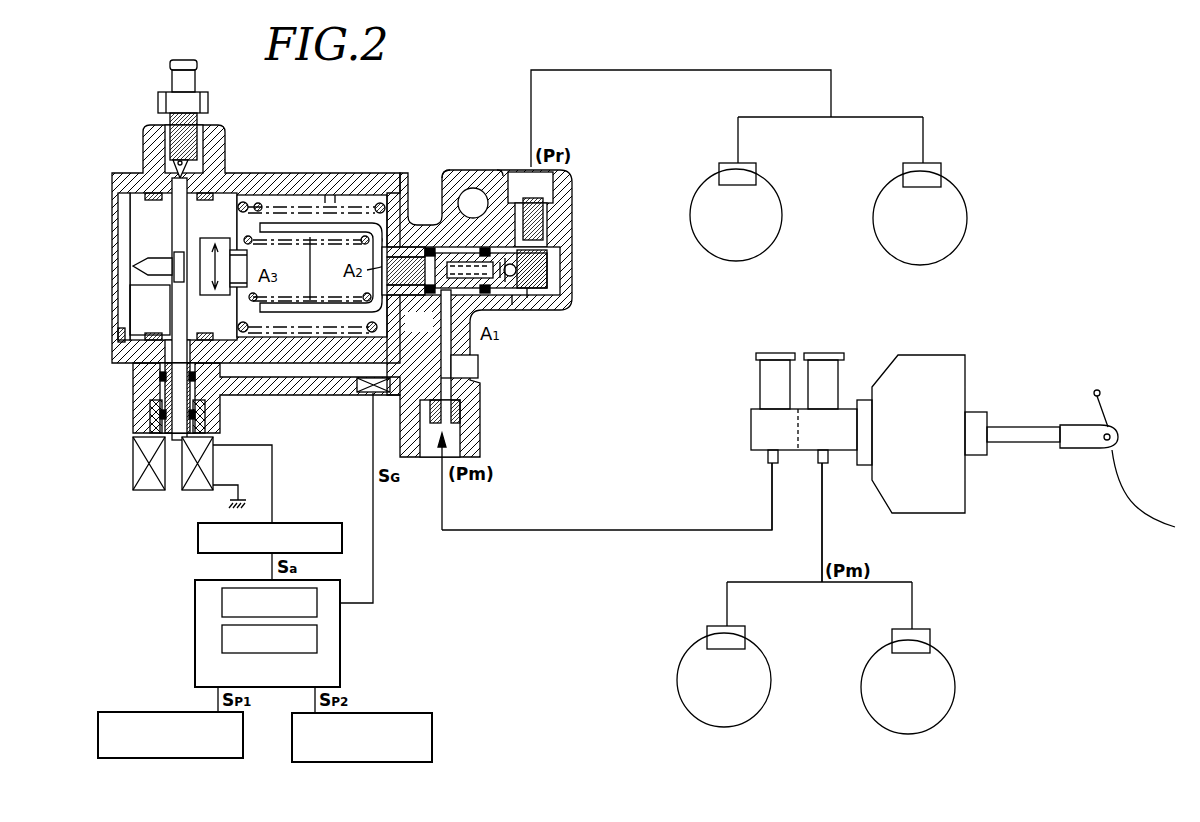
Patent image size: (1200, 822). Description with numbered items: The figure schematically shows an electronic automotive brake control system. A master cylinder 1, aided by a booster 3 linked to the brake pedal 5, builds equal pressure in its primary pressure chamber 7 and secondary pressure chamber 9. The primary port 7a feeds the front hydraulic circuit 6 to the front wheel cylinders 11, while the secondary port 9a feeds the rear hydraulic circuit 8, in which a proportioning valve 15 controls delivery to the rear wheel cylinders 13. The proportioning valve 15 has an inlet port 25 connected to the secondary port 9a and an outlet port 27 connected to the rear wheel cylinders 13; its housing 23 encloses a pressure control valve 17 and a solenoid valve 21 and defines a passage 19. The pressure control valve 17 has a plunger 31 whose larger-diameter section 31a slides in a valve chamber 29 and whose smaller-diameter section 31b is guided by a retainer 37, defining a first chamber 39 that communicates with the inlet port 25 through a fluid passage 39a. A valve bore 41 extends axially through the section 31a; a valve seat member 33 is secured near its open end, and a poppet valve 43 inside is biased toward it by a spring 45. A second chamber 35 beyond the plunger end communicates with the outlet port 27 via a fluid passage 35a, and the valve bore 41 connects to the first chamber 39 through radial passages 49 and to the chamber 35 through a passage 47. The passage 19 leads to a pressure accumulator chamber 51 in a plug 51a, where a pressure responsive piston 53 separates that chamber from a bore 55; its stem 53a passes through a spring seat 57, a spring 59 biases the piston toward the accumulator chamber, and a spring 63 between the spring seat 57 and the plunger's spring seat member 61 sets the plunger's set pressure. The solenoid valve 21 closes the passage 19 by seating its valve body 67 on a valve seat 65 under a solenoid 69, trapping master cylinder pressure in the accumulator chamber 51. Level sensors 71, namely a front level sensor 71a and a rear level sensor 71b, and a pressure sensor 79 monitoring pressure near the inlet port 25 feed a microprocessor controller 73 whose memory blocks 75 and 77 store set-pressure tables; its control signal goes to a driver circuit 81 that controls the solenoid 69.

The master cylinder 1 is at (755, 420).
The booster 3 is at (948, 363).
The brake pedal 5 is at (1175, 527).
The front brake system hydraulic circuit 6 is at (822, 523).
The primary pressure chamber 7 is at (845, 447).
The primary port 7a is at (818, 462).
The rear brake system hydraulic circuit 8 is at (605, 481).
The secondary pressure chamber 9 is at (763, 445).
The secondary port 9a is at (778, 462).
The front brake system wheel cylinders 11 is at (745, 630).
The rear brake system wheel cylinders 13 is at (756, 165).
The proportioning valve 15 is at (452, 160).
The pressure control valve 17 is at (545, 218).
The passage 19 is at (272, 368).
The solenoid valve 21 is at (122, 459).
The housing 23 is at (365, 173).
The inlet port 25 is at (457, 437).
The outlet port 27 is at (538, 180).
The valve chamber 29 is at (462, 177).
The plunger 31 is at (425, 235).
The larger-diameter section 31a is at (498, 170).
The smaller-diameter section 31b is at (442, 177).
The valve seat member 33 is at (547, 287).
The second chamber 35 is at (537, 255).
The fluid passage 35a is at (562, 222).
The retainer 37 is at (393, 233).
The first chamber 39 is at (428, 345).
The fluid passage 39a is at (452, 380).
The valve bore 41 is at (518, 313).
The poppet valve 43 is at (537, 300).
The spring 45 is at (512, 300).
The passage 47 is at (585, 258).
The radial passages 49 is at (452, 356).
The pressure accumulator chamber 51 is at (173, 242).
The plug 51a is at (145, 307).
The pressure responsive piston 53 is at (217, 240).
The stem 53a is at (230, 263).
The bore 55 is at (330, 197).
The spring seat 57 is at (260, 207).
The spring 59 is at (275, 203).
The spring seat member 61 is at (343, 252).
The spring 63 is at (310, 237).
The valve seat 65 is at (132, 353).
The valve body 67 is at (142, 385).
The solenoid 69 is at (115, 440).
The level sensors 71 is at (362, 683).
The front level sensor 71a is at (125, 712).
The rear level sensor 71b is at (418, 713).
The controller 73 is at (340, 660).
The memory block 75 is at (222, 637).
The memory block 77 is at (222, 600).
The pressure sensor 79 is at (367, 393).
The driver circuit 81 is at (198, 538).